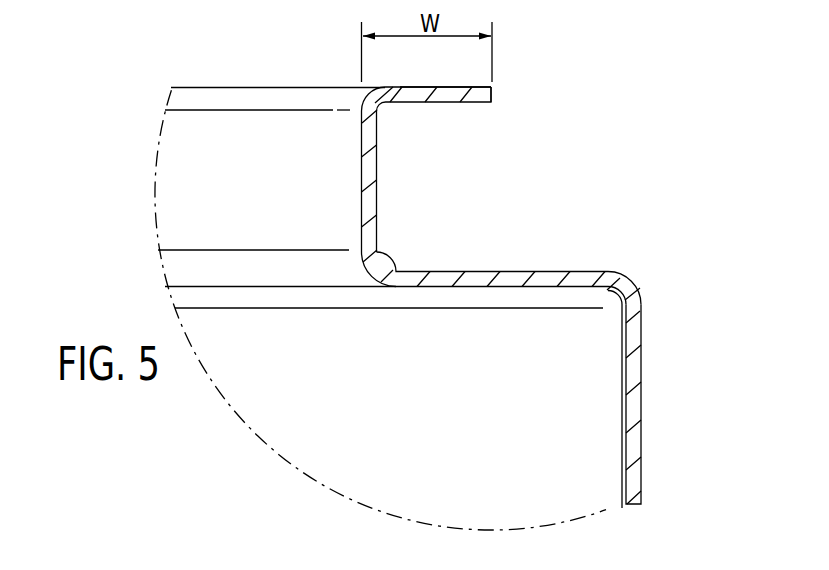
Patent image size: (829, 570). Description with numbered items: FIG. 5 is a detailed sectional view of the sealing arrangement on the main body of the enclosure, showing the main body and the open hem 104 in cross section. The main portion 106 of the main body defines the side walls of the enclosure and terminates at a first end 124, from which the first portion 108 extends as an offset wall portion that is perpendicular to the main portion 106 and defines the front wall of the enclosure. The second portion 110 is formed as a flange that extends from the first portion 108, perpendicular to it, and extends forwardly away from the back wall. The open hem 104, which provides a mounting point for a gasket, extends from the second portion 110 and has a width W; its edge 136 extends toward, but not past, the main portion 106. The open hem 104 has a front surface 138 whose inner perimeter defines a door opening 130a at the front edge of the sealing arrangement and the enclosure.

The door opening 130a is at (220, 82).
The open hem 104 is at (443, 97).
The front surface 138 is at (407, 87).
The edge 136 is at (492, 95).
The second portion 110 is at (361, 180).
The first portion 108 is at (513, 272).
The first end 124 is at (637, 320).
The main portion 106 is at (640, 403).